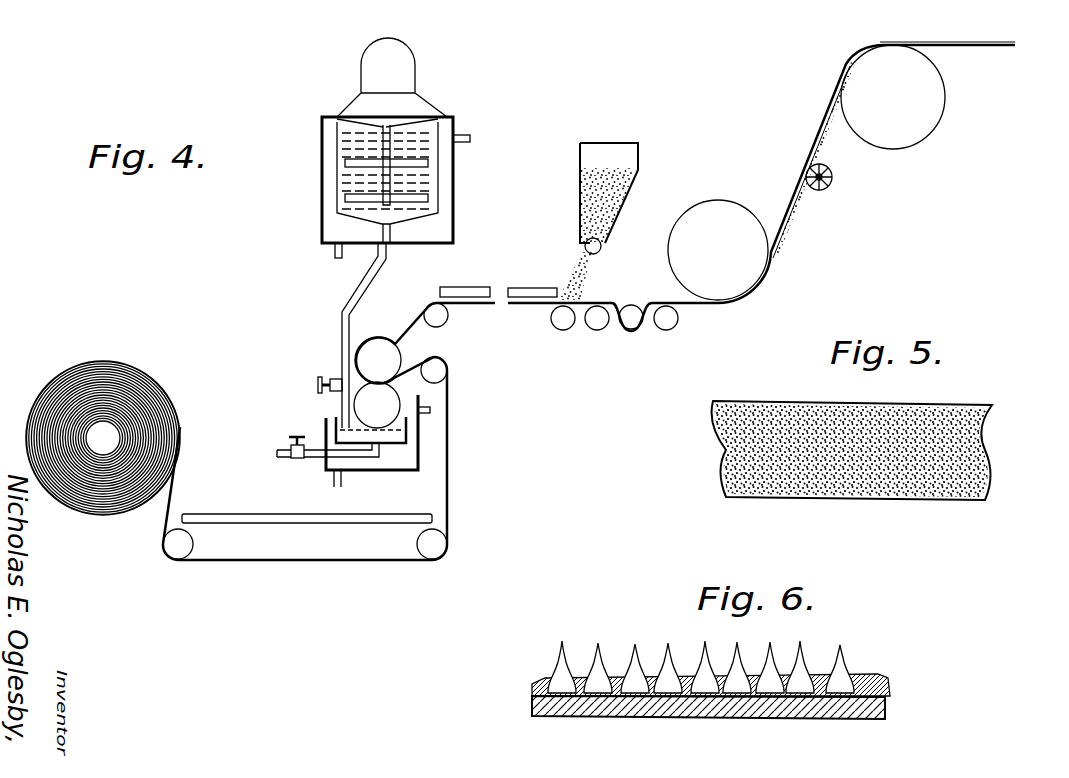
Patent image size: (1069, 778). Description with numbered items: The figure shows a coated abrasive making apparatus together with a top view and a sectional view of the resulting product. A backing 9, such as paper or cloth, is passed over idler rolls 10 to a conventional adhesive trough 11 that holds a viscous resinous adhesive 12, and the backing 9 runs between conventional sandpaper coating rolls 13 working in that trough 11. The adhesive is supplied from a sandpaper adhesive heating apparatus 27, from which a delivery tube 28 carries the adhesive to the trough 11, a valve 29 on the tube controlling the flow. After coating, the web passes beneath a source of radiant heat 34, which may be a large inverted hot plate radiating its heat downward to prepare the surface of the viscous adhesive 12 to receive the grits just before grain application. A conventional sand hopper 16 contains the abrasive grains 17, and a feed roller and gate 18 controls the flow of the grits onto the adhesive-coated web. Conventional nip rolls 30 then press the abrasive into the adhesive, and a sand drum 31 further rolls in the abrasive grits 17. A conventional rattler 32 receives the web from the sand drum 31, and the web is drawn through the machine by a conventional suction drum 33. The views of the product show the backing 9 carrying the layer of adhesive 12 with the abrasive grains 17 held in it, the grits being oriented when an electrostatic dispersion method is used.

In FIG. 4, the backing 9 is at (160, 425).
In FIG. 5, the backing 9 is at (973, 467).
In FIG. 6, the backing 9 is at (880, 708).
In FIG. 4, the idler rolls 10 is at (178, 557).
In FIG. 4, the adhesive trough 11 is at (335, 420).
In FIG. 4, the viscous resinous adhesive 12 is at (420, 437).
In FIG. 6, the viscous resinous adhesive 12 is at (882, 688).
In FIG. 4, the coating rolls 13 is at (378, 345).
In FIG. 4, the sand hopper 16 is at (578, 206).
In FIG. 4, the abrasive grains 17 is at (606, 168).
In FIG. 5, the abrasive grains 17 is at (948, 477).
In FIG. 6, the abrasive grains 17 is at (838, 667).
In FIG. 4, the feed roller and gate 18 is at (601, 250).
In FIG. 4, the adhesive heating apparatus 27 is at (452, 187).
In FIG. 4, the delivery tube 28 is at (342, 322).
In FIG. 4, the valve 29 is at (322, 384).
In FIG. 4, the nip rolls 30 is at (636, 310).
In FIG. 4, the sand drum 31 is at (731, 216).
In FIG. 4, the rattler 32 is at (829, 187).
In FIG. 4, the suction drum 33 is at (897, 135).
In FIG. 4, the source of radiant heat 34 is at (478, 276).